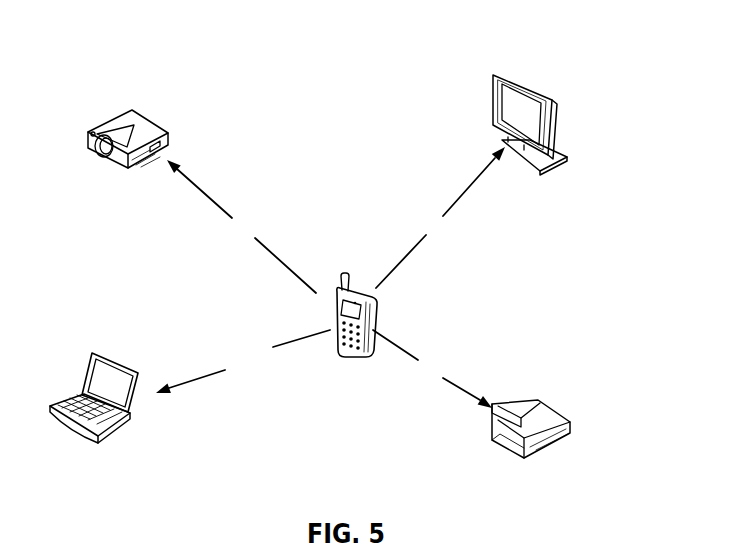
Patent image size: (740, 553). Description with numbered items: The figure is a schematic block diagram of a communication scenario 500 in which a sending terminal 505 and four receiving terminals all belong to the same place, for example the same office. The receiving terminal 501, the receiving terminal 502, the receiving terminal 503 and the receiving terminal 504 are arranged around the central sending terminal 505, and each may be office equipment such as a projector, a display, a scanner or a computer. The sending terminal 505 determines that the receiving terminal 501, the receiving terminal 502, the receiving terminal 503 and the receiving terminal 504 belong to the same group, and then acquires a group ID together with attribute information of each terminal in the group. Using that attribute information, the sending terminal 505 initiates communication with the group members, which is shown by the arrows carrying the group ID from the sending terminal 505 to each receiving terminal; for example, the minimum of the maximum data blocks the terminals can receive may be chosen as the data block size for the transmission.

The communication scenario 500 is at (338, 85).
The receiving terminal 501 is at (176, 187).
The receiving terminal 502 is at (517, 162).
The receiving terminal 503 is at (525, 414).
The receiving terminal 504 is at (175, 404).
The sending terminal 505 is at (458, 315).